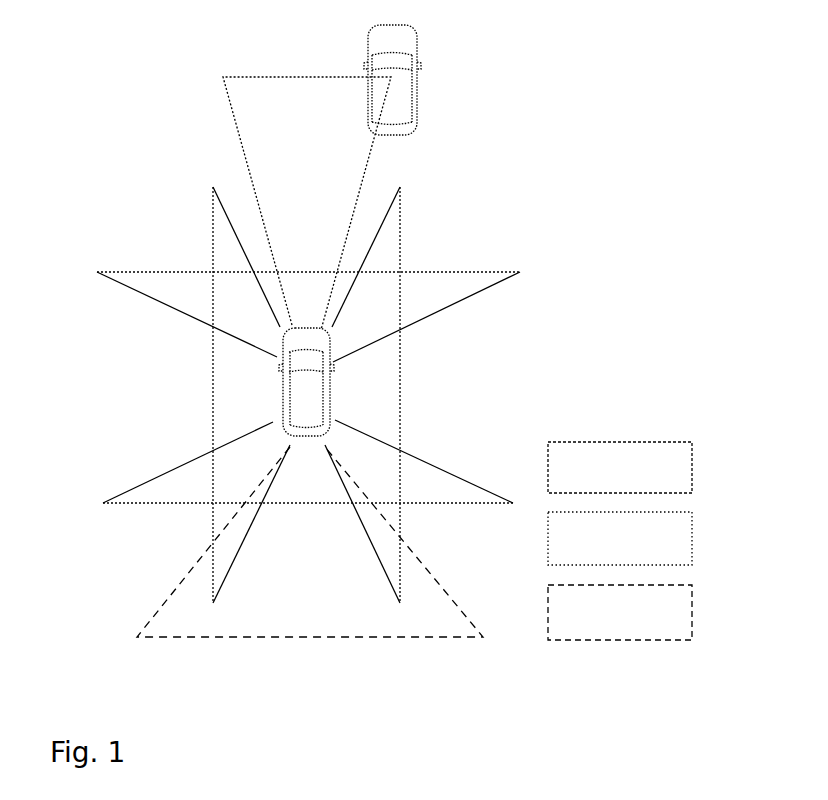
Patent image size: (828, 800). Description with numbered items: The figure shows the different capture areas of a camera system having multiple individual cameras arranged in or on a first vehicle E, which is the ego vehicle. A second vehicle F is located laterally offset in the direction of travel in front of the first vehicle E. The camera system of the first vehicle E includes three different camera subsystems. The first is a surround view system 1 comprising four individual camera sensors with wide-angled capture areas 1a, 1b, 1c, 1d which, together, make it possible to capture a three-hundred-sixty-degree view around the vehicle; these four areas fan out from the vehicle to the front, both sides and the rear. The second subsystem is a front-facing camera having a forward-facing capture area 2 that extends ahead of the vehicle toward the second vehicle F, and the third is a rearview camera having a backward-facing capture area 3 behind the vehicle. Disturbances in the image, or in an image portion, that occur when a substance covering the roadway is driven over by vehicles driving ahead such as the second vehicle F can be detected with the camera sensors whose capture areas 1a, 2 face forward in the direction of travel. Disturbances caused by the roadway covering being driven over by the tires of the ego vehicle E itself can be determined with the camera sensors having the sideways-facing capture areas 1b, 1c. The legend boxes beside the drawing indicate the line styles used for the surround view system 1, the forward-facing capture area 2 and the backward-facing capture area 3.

The surround view system 1 is at (626, 479).
The forward-facing capture area of surround view system 1a is at (438, 303).
The sideways-facing capture area of surround view system 1b is at (251, 401).
The sideways-facing capture area of surround view system 1c is at (378, 401).
The backward-facing capture area of surround view system 1d is at (435, 497).
The forward-facing capture area of front-facing camera 2 is at (303, 115).
The backward-facing capture area of rearview camera 3 is at (296, 625).
The first vehicle E is at (313, 383).
The second vehicle F is at (418, 85).